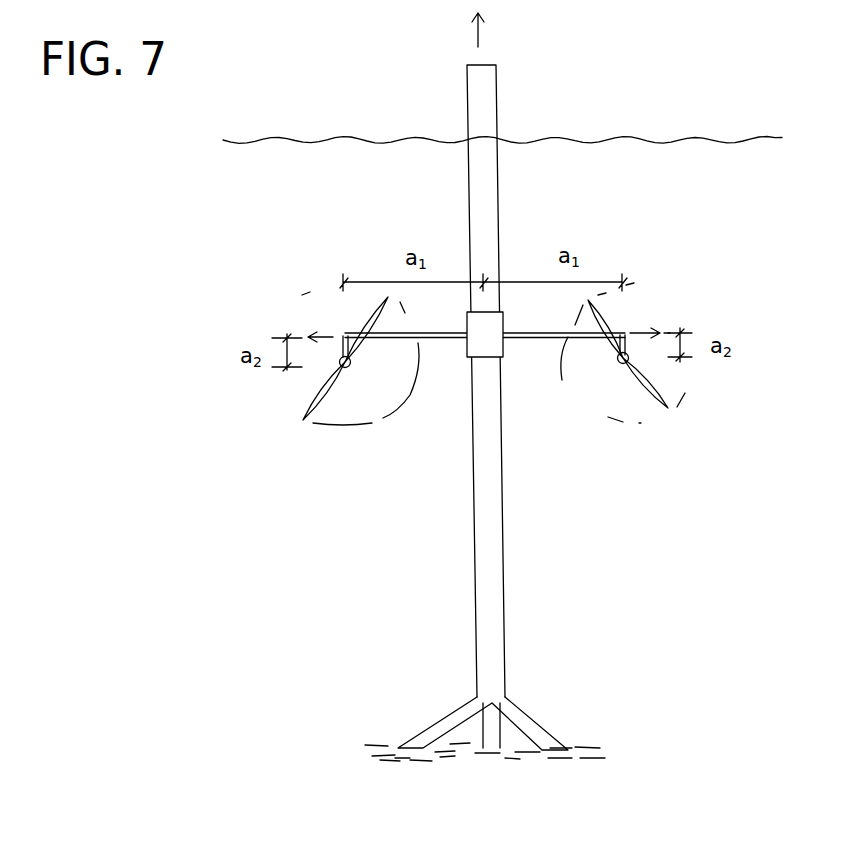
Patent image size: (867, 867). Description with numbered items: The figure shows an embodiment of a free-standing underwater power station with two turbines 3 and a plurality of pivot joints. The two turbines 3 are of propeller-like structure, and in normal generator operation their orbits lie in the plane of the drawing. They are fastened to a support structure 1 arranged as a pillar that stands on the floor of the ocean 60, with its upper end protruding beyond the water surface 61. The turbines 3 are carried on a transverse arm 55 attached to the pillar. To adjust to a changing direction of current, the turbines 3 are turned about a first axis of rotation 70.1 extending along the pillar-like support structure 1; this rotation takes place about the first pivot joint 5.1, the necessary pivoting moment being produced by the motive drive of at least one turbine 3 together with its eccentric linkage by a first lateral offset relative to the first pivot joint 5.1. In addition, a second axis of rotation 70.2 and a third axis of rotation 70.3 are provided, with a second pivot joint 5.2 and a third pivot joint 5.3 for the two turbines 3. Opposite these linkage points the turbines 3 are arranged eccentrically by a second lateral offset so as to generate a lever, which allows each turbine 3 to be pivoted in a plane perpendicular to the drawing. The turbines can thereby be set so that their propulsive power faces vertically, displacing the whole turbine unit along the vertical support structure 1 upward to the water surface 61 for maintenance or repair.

The support structure 1 is at (505, 672).
The turbine 3 is at (303, 421).
The first pivot joint 5.1 is at (482, 347).
The second pivot joint 5.2 is at (360, 338).
The third pivot joint 5.3 is at (620, 340).
The cross arm 55 is at (538, 332).
The floor of the ocean 60 is at (617, 738).
The water surface 61 is at (788, 138).
The first axis of rotation 70.1 is at (505, 30).
The second axis of rotation 70.2 is at (310, 292).
The third axis of rotation 70.3 is at (638, 330).